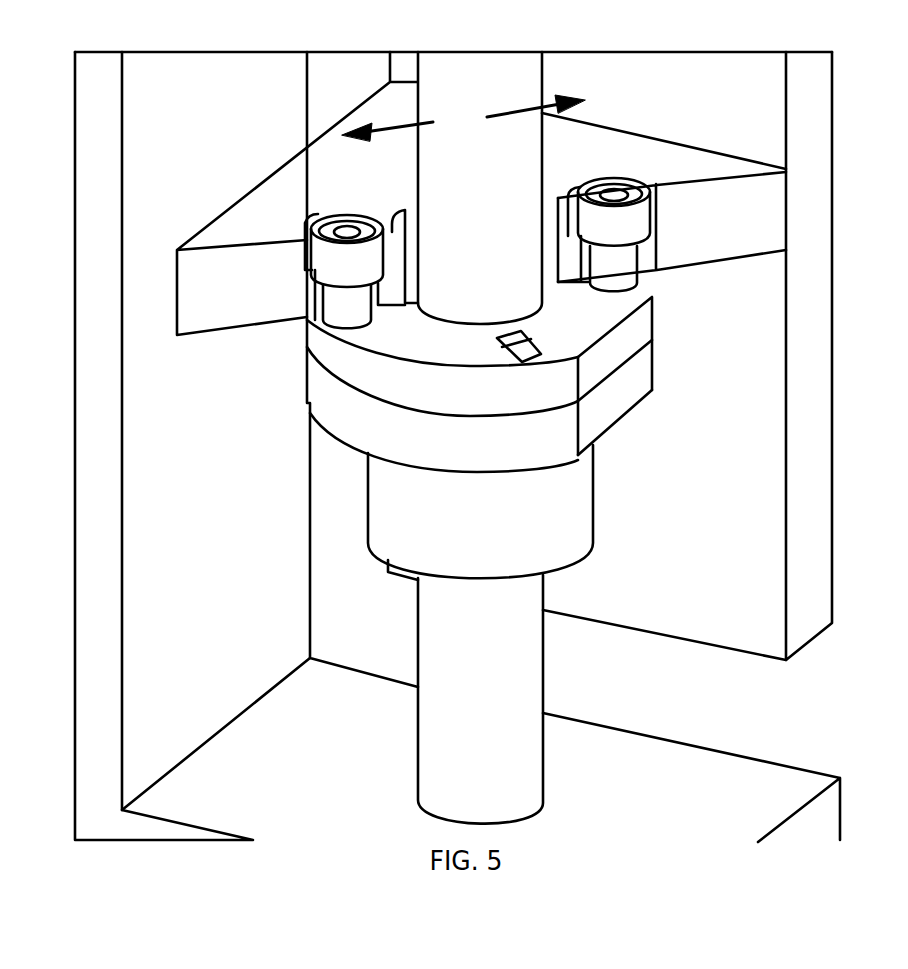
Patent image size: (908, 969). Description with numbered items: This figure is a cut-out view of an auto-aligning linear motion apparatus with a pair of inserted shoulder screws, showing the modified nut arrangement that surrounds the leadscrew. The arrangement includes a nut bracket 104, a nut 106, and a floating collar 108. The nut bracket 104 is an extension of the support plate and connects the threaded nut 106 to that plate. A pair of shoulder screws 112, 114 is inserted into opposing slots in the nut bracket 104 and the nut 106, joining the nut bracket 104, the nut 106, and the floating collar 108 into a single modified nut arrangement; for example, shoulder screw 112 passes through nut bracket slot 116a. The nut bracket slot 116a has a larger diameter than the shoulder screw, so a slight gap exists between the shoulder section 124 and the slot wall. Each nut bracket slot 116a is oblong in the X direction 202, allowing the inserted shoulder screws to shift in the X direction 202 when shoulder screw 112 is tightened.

The nut bracket 104 is at (479, 192).
The nut 106 is at (430, 350).
The floating collar 108 is at (473, 447).
The shoulder screw 112 is at (337, 213).
The shoulder screw 114 is at (585, 182).
The nut bracket slot 116a is at (322, 217).
The shoulder section 124 is at (328, 295).
The X direction 202 is at (446, 124).